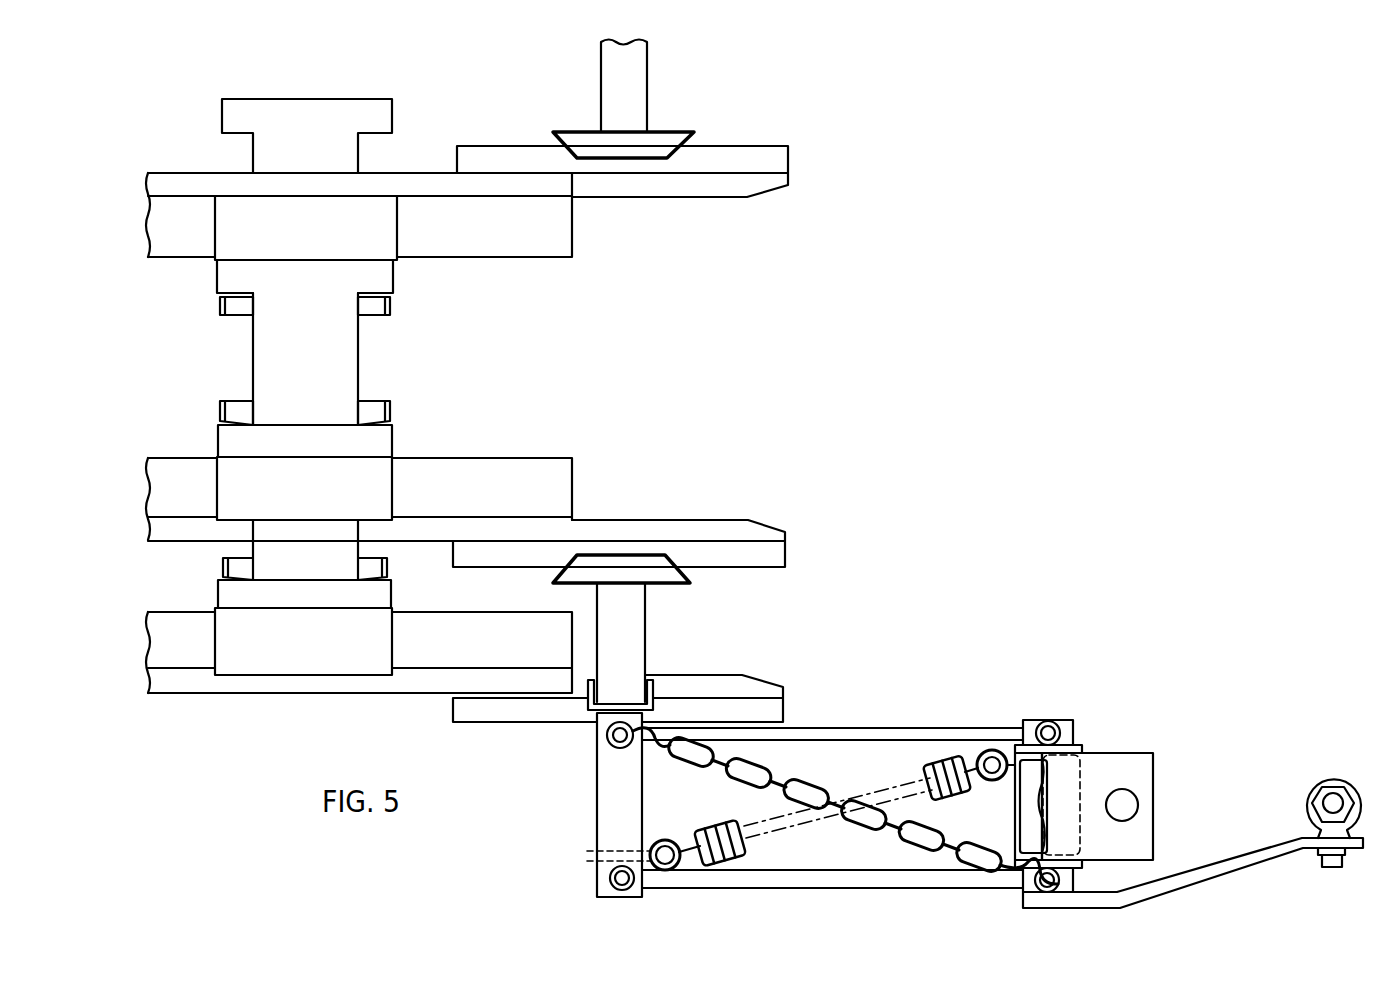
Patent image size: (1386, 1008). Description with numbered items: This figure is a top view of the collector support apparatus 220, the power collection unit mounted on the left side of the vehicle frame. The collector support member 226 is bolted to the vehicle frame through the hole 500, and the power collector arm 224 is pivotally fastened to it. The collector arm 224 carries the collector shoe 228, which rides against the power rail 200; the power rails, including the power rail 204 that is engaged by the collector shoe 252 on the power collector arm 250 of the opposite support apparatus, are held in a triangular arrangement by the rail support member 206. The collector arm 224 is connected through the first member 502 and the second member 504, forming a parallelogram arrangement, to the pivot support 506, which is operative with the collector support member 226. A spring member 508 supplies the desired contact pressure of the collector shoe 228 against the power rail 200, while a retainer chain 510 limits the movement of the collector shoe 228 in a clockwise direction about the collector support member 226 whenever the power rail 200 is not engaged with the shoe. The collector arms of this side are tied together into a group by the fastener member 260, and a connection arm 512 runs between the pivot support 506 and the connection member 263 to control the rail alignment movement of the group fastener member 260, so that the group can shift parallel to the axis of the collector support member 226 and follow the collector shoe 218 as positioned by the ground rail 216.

The power rail 200 is at (507, 466).
The power rail 204 is at (518, 247).
The rail support member 206 is at (348, 352).
The ground rail 216 is at (465, 622).
The collector shoe 218 is at (758, 687).
The collector support apparatus 220 is at (917, 582).
The power collector arm 224 is at (633, 635).
The collector support member 226 is at (1120, 757).
The collector shoe 228 is at (752, 537).
The power collector arm 250 is at (630, 72).
The collector shoe 252 is at (780, 158).
The fastener member 260 is at (588, 698).
The connection member 263 is at (1333, 800).
The hole 500 is at (1127, 797).
The first member 502 is at (893, 728).
The second member 504 is at (818, 877).
The pivot support 506 is at (1065, 720).
The spring member 508 is at (888, 778).
The retainer chain 510 is at (723, 784).
The connection arm 512 is at (1231, 863).